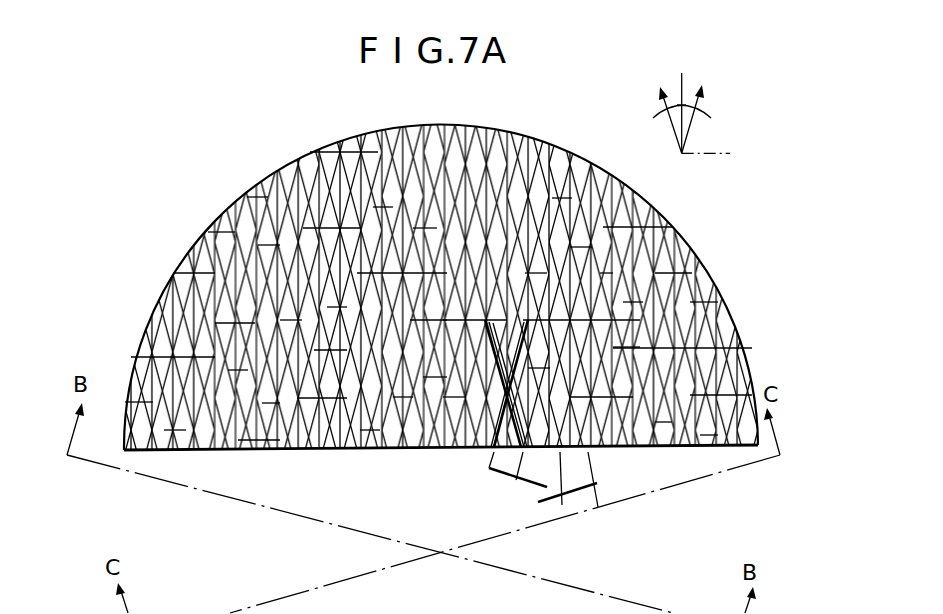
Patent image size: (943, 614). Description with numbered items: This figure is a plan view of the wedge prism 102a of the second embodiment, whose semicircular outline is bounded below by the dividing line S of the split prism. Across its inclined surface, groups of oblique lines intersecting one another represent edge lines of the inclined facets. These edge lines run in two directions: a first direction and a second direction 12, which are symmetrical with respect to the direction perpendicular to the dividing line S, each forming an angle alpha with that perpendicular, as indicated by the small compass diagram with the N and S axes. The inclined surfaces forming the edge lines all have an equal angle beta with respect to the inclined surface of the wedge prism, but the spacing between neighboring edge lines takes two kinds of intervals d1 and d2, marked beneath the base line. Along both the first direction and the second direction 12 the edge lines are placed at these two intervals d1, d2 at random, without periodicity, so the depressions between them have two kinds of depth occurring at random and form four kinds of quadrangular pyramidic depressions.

The wedge prism 102a is at (222, 203).
The second direction 12 is at (693, 105).
The first interval d1 is at (502, 472).
The second interval d2 is at (525, 482).